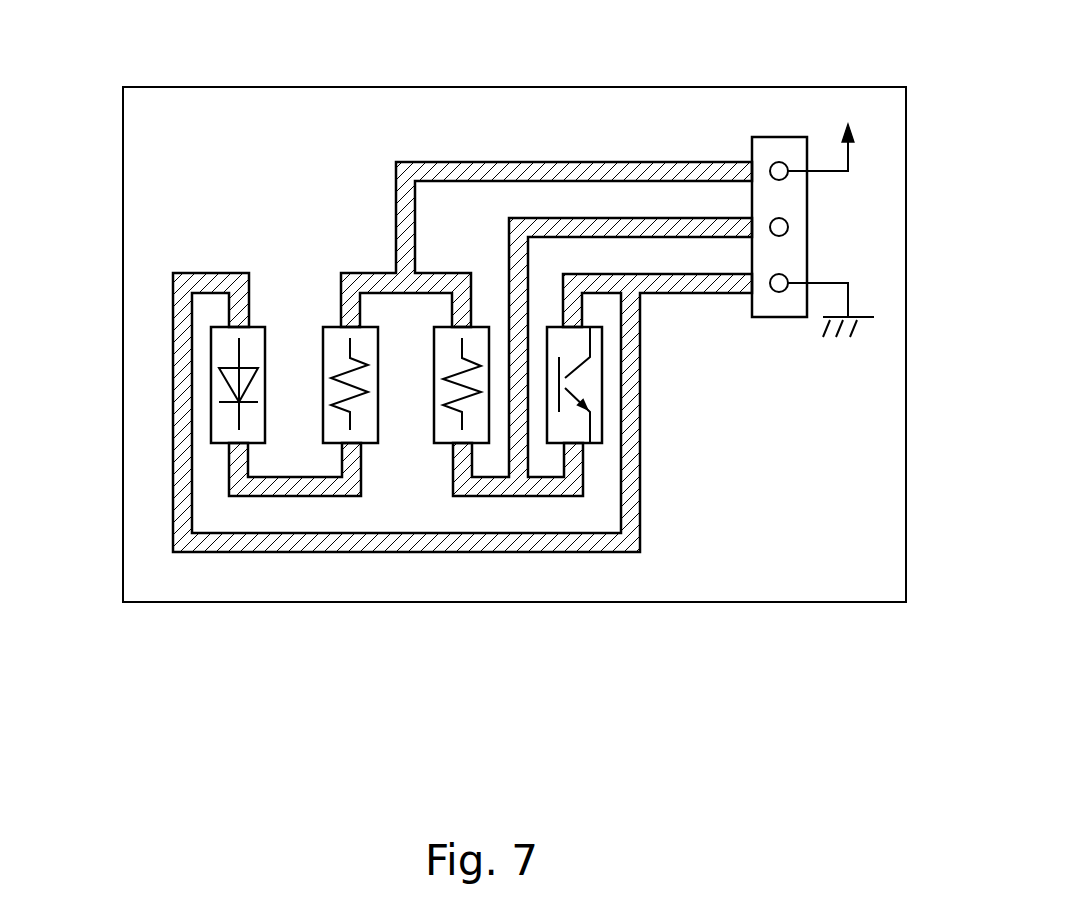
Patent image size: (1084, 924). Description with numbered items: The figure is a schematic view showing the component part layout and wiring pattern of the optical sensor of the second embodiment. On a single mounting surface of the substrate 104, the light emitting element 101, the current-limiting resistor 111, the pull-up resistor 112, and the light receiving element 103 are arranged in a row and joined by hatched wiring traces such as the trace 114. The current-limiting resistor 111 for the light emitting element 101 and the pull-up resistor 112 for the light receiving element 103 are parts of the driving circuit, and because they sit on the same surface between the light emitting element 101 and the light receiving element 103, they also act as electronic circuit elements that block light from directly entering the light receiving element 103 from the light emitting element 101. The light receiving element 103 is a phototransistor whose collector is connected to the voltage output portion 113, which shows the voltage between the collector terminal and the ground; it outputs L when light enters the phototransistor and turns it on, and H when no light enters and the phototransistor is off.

The light emitting element 101 is at (211, 392).
The current-limiting resistor 111 is at (323, 343).
The pull-up resistor 112 is at (434, 420).
The light receiving element 103 is at (601, 402).
The substrate 104 is at (753, 570).
The voltage output portion 113 is at (807, 215).
The conductive trace 114 is at (586, 161).